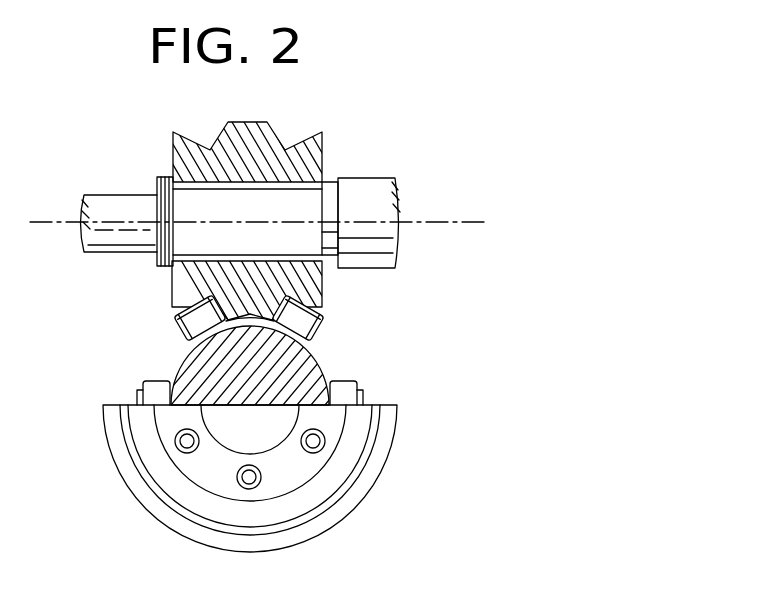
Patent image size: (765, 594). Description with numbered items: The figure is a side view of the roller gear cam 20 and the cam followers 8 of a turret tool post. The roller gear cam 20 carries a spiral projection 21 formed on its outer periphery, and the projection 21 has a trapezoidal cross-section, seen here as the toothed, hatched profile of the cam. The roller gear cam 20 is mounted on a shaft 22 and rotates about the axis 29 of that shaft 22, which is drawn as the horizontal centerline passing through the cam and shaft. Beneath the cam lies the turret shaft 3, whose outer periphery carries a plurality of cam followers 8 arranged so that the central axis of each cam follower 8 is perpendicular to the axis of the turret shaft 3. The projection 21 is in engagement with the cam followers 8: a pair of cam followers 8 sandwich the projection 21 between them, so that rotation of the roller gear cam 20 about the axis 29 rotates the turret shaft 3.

The roller gear cam 20 is at (268, 203).
The spiral projection 21 is at (254, 140).
The shaft 22 is at (100, 238).
The axis 29 is at (447, 222).
The cam follower 8 is at (175, 338).
The turret shaft 3 is at (300, 372).